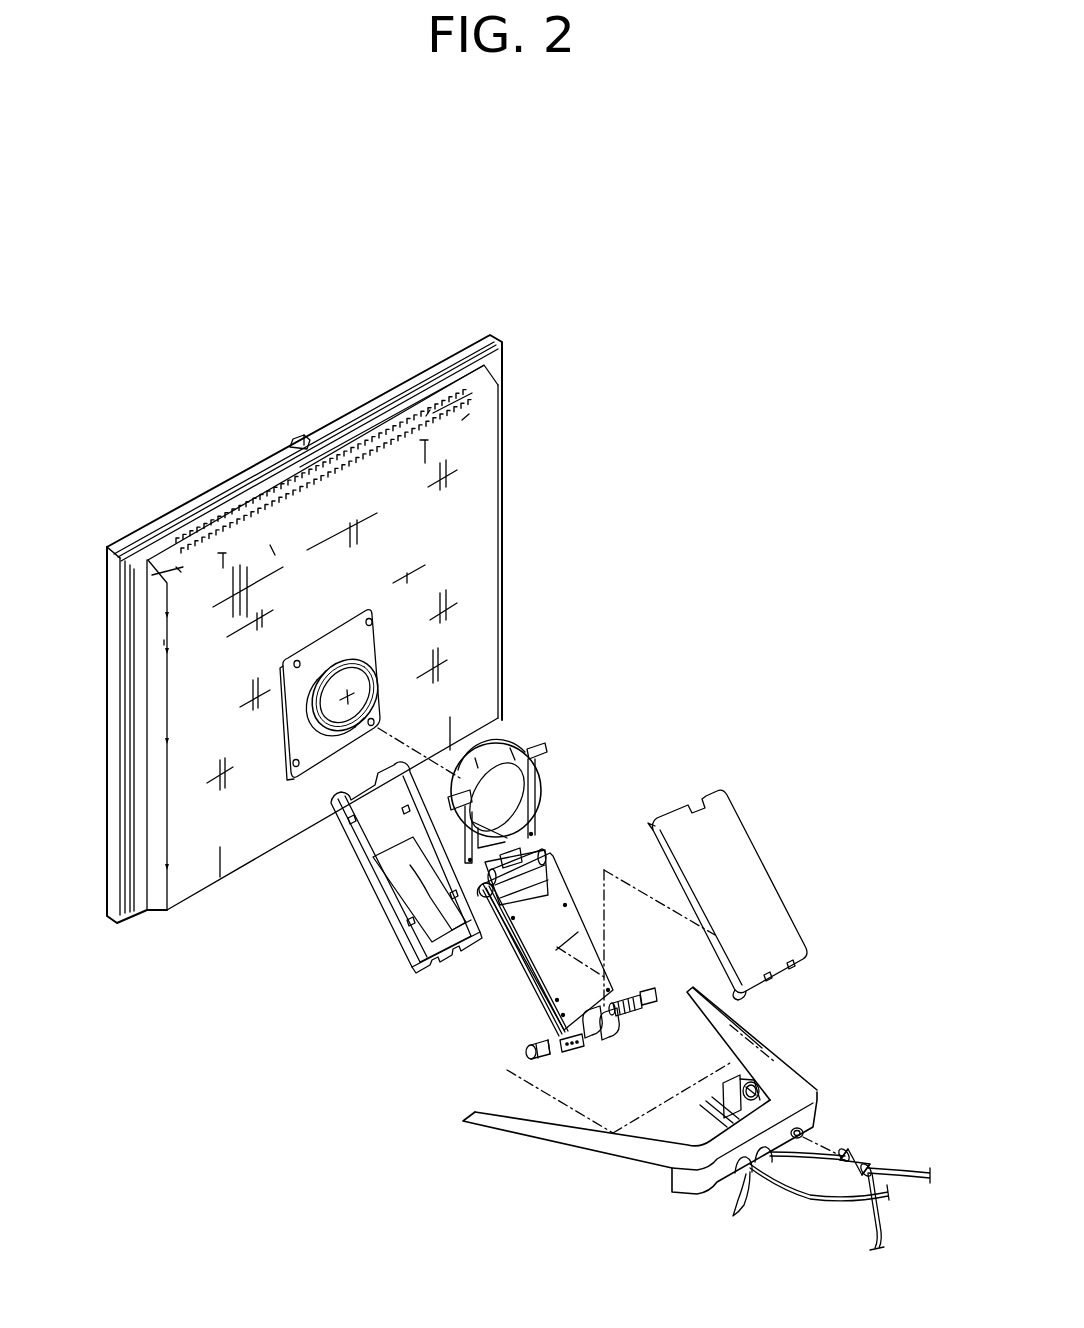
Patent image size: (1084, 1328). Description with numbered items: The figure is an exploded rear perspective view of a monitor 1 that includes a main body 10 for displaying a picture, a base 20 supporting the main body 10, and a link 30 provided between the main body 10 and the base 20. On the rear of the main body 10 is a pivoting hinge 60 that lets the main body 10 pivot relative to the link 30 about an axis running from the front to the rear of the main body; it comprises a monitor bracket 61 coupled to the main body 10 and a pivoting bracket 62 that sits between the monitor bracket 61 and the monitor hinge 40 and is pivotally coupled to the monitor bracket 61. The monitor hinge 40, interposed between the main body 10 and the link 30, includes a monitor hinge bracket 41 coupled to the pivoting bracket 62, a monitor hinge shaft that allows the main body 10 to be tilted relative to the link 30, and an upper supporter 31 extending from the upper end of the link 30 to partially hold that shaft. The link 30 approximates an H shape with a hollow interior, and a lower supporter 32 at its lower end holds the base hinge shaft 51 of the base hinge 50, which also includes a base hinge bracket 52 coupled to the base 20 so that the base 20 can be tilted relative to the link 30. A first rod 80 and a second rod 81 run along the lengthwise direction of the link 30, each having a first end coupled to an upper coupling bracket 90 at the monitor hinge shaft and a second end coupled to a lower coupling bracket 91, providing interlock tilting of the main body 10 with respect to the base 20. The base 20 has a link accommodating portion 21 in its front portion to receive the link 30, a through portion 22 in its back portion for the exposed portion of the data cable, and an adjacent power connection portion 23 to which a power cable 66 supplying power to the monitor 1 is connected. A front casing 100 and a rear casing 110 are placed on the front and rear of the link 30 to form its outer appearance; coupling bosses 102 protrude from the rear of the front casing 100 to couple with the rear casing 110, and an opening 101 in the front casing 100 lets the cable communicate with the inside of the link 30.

The monitor 1 is at (578, 392).
The main body 10 is at (485, 520).
The base 20 is at (790, 1086).
The link accommodating portion 21 is at (724, 1065).
The through portion 22 is at (746, 1174).
The power connection portion 23 is at (808, 1136).
The link 30 is at (560, 932).
The upper supporter 31 is at (542, 852).
The lower supporter 32 is at (628, 1018).
The monitor hinge 40 is at (601, 767).
The monitor hinge bracket 41 is at (522, 800).
The base hinge 50 is at (643, 1075).
The base hinge shaft 51 is at (608, 1018).
The base hinge bracket 52 is at (663, 990).
The pivoting hinge 60 is at (590, 630).
The monitor bracket 61 is at (372, 650).
The pivoting bracket 62 is at (348, 707).
The power cable 66 is at (865, 1162).
The first rod 80 is at (512, 950).
The second rod 81 is at (530, 978).
The upper coupling bracket 90 is at (490, 890).
The lower coupling bracket 91 is at (530, 1046).
The front casing 100 is at (372, 895).
The opening 101 is at (375, 852).
The coupling bosses 102 is at (398, 942).
The rear casing 110 is at (748, 870).